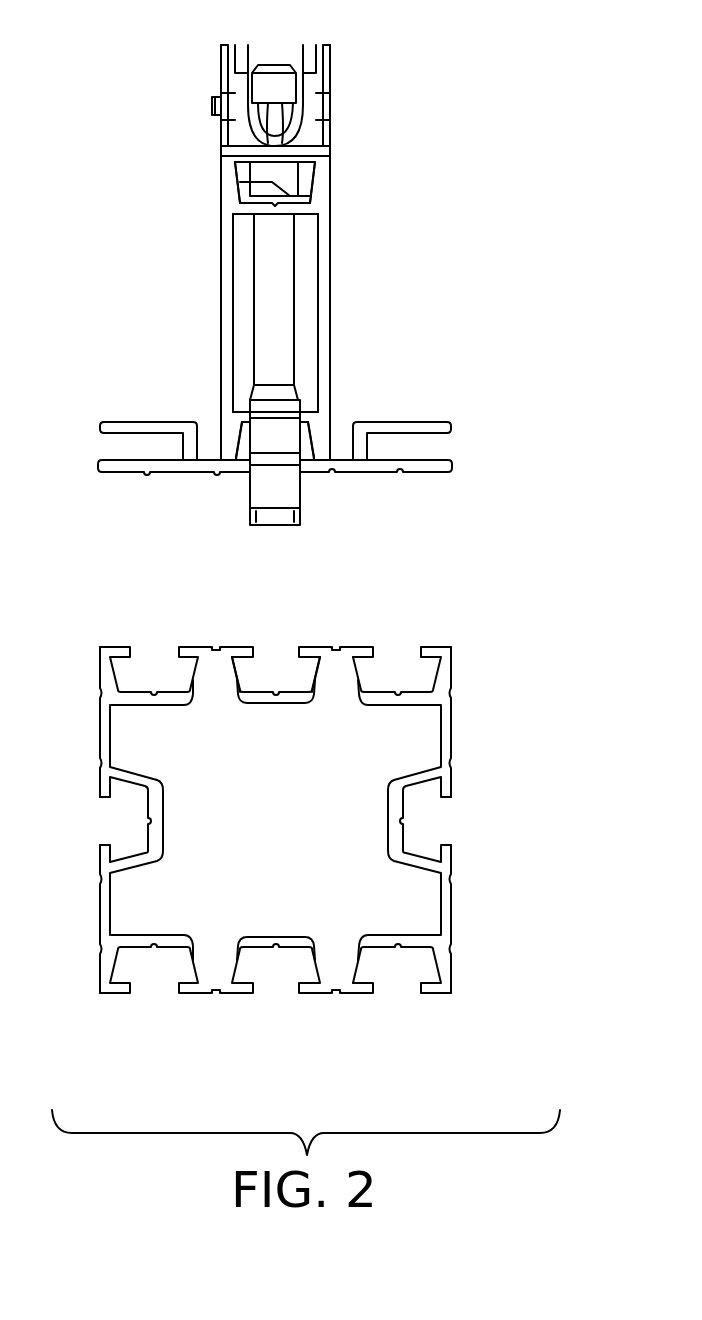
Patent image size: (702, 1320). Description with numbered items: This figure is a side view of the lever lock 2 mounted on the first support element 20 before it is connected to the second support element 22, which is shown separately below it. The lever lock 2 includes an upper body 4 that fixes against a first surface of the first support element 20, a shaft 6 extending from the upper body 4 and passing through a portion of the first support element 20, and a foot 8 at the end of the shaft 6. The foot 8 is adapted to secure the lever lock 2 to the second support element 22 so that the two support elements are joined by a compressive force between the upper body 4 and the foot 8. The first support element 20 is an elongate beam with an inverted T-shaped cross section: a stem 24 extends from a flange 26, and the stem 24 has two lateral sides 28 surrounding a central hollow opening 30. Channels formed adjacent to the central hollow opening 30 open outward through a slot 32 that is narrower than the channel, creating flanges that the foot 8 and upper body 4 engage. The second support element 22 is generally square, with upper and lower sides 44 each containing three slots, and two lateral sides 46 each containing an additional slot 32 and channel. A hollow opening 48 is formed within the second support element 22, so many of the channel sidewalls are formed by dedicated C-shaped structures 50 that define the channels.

The lever lock 2 is at (354, 55).
The upper body 4 is at (328, 86).
The shaft 6 is at (285, 300).
The foot 8 is at (300, 515).
The first support element 20 is at (540, 200).
The second support element 22 is at (527, 684).
The stem 24 is at (353, 275).
The flange 26 is at (418, 398).
The lateral sides 28 is at (221, 245).
The central hollow opening 30 is at (311, 250).
The slot 32 is at (278, 665).
The upper and lower sides 44 is at (405, 628).
The lateral sides 46 is at (80, 924).
The hollow opening 48 is at (242, 841).
The C-shaped structures 50 is at (262, 703).